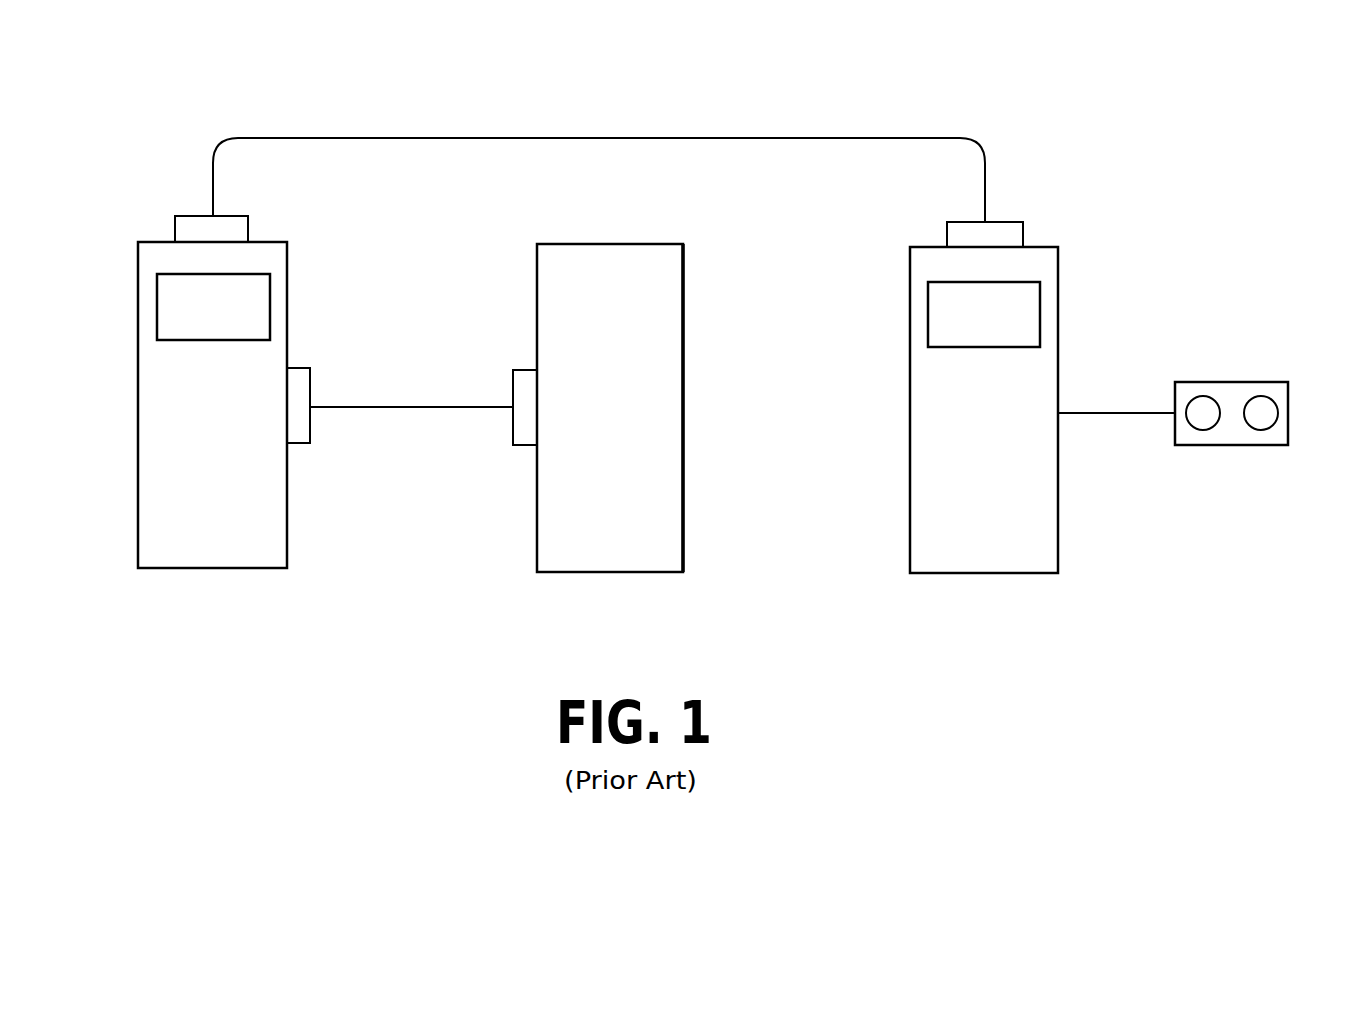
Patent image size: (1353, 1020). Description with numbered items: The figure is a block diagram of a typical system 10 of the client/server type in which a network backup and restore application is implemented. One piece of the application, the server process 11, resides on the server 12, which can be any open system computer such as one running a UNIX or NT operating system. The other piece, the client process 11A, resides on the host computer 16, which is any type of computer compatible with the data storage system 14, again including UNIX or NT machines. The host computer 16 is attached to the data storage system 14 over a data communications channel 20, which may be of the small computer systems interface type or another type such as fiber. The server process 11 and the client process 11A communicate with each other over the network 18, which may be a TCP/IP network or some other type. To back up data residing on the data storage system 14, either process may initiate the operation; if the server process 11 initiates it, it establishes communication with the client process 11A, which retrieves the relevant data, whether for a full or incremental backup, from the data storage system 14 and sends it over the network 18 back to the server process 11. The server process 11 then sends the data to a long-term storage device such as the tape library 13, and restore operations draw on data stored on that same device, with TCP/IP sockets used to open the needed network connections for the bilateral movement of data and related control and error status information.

The system 10 is at (986, 222).
The server process 11 is at (956, 348).
The client process 11A is at (186, 341).
The server 12 is at (1062, 279).
The tape library 13 is at (1255, 381).
The data storage system 14 is at (685, 295).
The host computer 16 is at (134, 259).
The network 18 is at (437, 135).
The data communications channel 20 is at (443, 406).